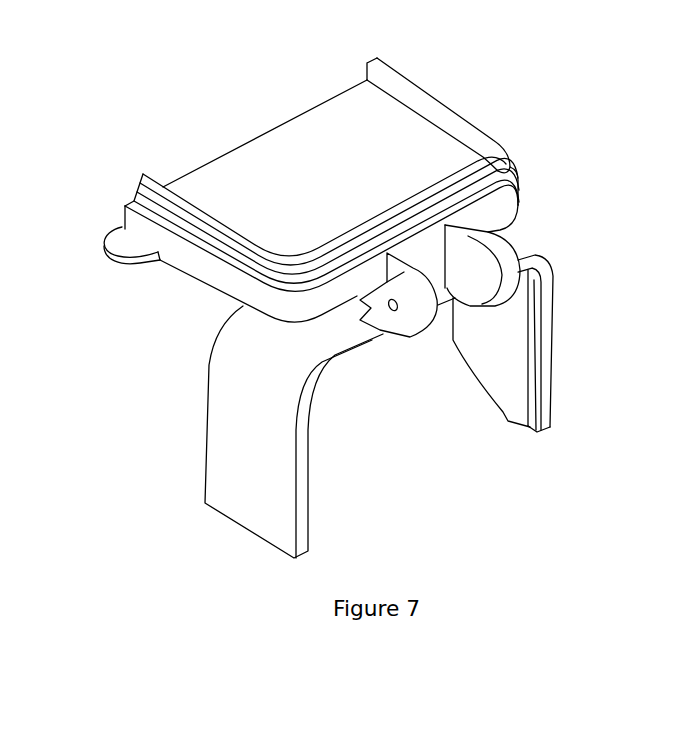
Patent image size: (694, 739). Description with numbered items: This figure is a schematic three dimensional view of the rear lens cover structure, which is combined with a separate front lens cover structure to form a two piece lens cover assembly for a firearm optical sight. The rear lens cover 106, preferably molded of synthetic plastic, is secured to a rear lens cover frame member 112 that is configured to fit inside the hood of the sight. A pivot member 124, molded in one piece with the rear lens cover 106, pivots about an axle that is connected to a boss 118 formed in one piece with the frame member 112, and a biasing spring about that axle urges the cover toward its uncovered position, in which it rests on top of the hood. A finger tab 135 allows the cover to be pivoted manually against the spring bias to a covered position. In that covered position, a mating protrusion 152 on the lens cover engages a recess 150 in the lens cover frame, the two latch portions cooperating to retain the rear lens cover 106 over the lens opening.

The rear lens cover 106 is at (445, 100).
The mating protrusion 152 is at (507, 165).
The pivot member 124 is at (513, 197).
The finger tab 135 is at (124, 236).
The rear lens cover frame member 112 is at (209, 371).
The boss 118 is at (520, 249).
The recess 150 is at (533, 394).